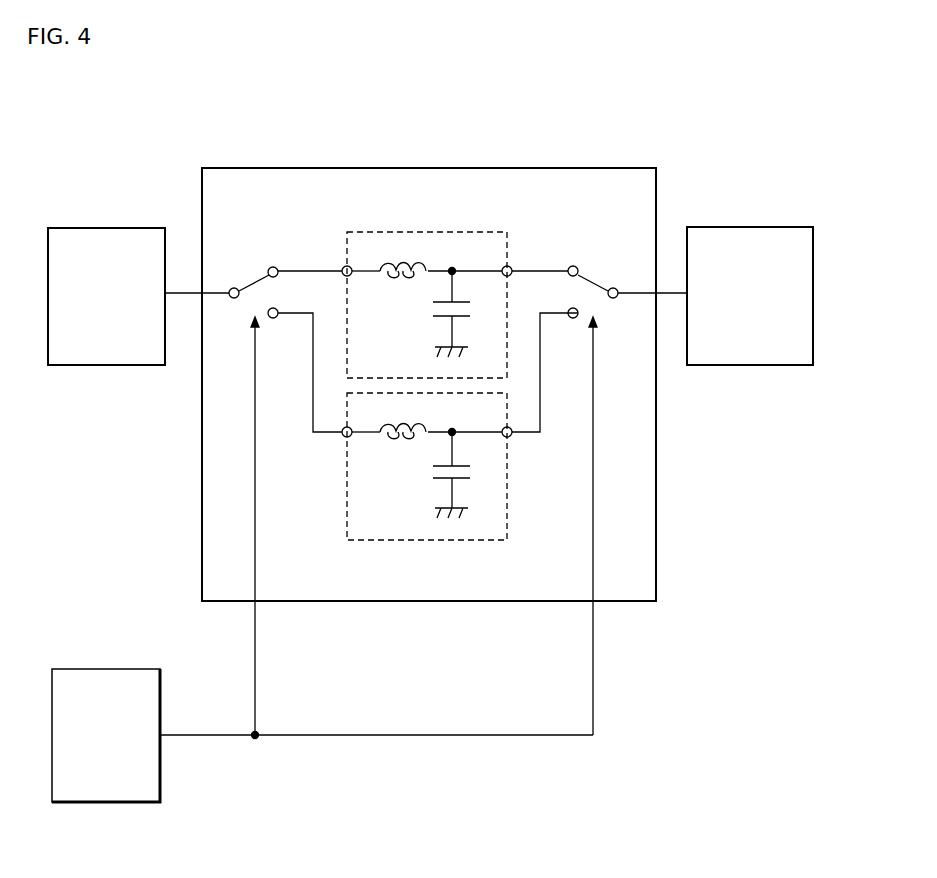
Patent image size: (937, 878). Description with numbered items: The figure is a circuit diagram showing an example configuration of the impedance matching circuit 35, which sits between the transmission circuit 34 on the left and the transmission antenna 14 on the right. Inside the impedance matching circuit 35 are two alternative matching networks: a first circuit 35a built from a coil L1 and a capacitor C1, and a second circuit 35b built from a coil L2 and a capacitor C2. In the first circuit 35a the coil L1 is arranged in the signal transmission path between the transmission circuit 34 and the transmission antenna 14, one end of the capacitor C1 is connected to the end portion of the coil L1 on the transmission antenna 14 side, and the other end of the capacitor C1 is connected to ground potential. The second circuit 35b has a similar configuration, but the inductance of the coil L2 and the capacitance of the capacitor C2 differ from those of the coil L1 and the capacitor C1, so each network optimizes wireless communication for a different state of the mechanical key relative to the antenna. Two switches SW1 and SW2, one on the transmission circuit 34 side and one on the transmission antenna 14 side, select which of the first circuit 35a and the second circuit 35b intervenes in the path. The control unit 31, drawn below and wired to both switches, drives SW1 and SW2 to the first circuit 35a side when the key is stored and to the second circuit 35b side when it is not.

The transmission circuit 34 is at (117, 228).
The transmission antenna 14 is at (760, 227).
The control unit 31 is at (130, 669).
The impedance matching circuit 35 is at (535, 168).
The first circuit 35a is at (468, 232).
The second circuit 35b is at (462, 541).
The switch SW1 is at (252, 280).
The switch SW2 is at (598, 284).
The coil L1 is at (406, 262).
The coil L2 is at (406, 419).
The capacitor C1 is at (434, 310).
The capacitor C2 is at (434, 472).